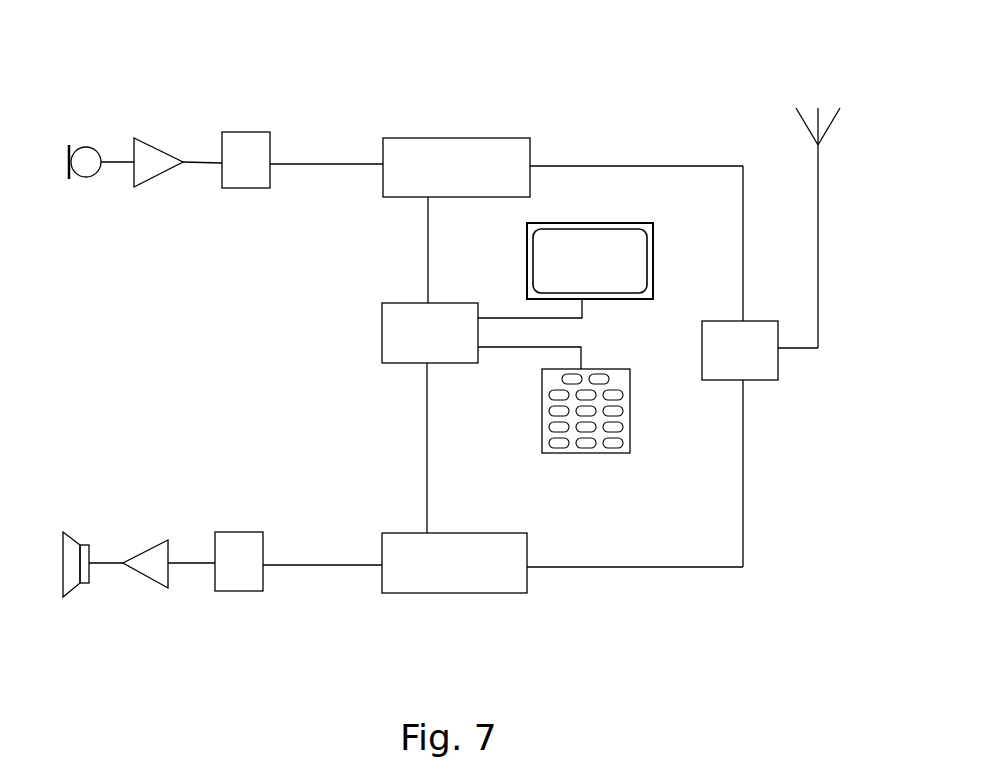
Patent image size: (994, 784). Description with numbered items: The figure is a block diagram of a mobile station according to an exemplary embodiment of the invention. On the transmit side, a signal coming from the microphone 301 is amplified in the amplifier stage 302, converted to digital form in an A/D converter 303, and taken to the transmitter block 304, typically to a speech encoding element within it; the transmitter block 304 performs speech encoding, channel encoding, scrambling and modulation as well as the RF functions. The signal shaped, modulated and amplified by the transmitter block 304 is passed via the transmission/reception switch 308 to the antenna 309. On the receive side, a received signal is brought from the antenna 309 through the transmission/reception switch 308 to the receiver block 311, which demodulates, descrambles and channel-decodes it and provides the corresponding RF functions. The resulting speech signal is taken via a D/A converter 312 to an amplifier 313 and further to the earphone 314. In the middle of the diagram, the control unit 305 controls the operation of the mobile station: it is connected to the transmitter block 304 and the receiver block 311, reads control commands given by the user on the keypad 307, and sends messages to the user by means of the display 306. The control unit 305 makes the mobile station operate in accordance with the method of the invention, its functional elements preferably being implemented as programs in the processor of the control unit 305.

The microphone 301 is at (90, 146).
The amplifier stage 302 is at (162, 142).
The A/D converter 303 is at (242, 132).
The transmitter block 304 is at (470, 138).
The control unit 305 is at (398, 363).
The display 306 is at (653, 282).
The keypad 307 is at (623, 369).
The transmission/reception switch 308 is at (757, 321).
The antenna 309 is at (823, 108).
The receiver block 311 is at (440, 532).
The D/A converter 312 is at (243, 532).
The amplifier 313 is at (170, 540).
The earphone 314 is at (80, 545).